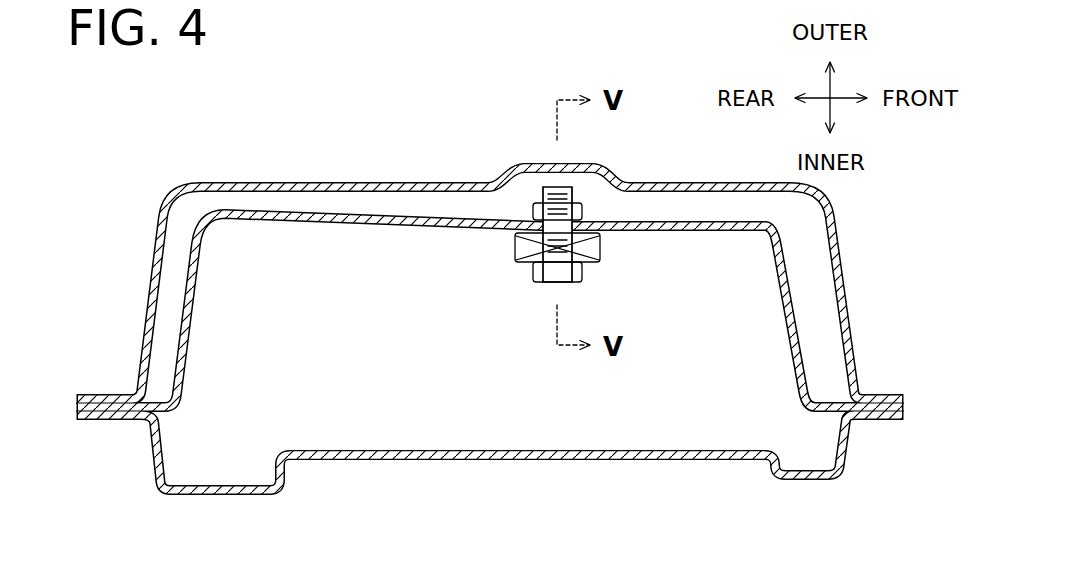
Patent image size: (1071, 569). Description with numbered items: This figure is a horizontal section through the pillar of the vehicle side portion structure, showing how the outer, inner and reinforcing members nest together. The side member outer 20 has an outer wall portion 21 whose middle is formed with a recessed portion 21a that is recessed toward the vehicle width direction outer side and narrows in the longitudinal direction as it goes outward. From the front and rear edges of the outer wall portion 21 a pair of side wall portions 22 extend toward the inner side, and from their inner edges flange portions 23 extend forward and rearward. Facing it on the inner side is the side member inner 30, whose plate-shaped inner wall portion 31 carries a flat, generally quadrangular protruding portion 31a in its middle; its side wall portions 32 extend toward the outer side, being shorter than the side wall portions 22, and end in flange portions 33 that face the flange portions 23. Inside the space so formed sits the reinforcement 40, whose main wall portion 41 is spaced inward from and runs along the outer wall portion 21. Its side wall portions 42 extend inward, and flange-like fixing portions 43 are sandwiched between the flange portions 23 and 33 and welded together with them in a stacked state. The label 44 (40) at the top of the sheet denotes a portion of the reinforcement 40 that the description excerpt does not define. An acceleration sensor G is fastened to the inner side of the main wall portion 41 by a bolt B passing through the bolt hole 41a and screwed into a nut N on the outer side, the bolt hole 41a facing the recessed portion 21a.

The side member outer 20 is at (170, 165).
The outer wall portion 21 is at (300, 182).
The recessed portion 21a is at (585, 183).
The side wall portion 22 is at (147, 293).
The flange portion 23 is at (104, 395).
The side member inner 30 is at (148, 490).
The inner wall portion 31 is at (230, 496).
The protruding portion 31a is at (441, 461).
The side wall portion 32 is at (160, 436).
The flange portion 33 is at (105, 419).
The reinforcement 40 is at (266, 270).
The main wall portion 41 is at (322, 224).
The bolt hole 41a is at (520, 262).
The side wall portion 42 is at (193, 310).
The fixing portion 43 is at (78, 408).
The fastening portion of reinforcement member 44 is at (430, 6).
The nut N is at (583, 210).
The acceleration sensor G is at (601, 247).
The bolt B is at (583, 271).